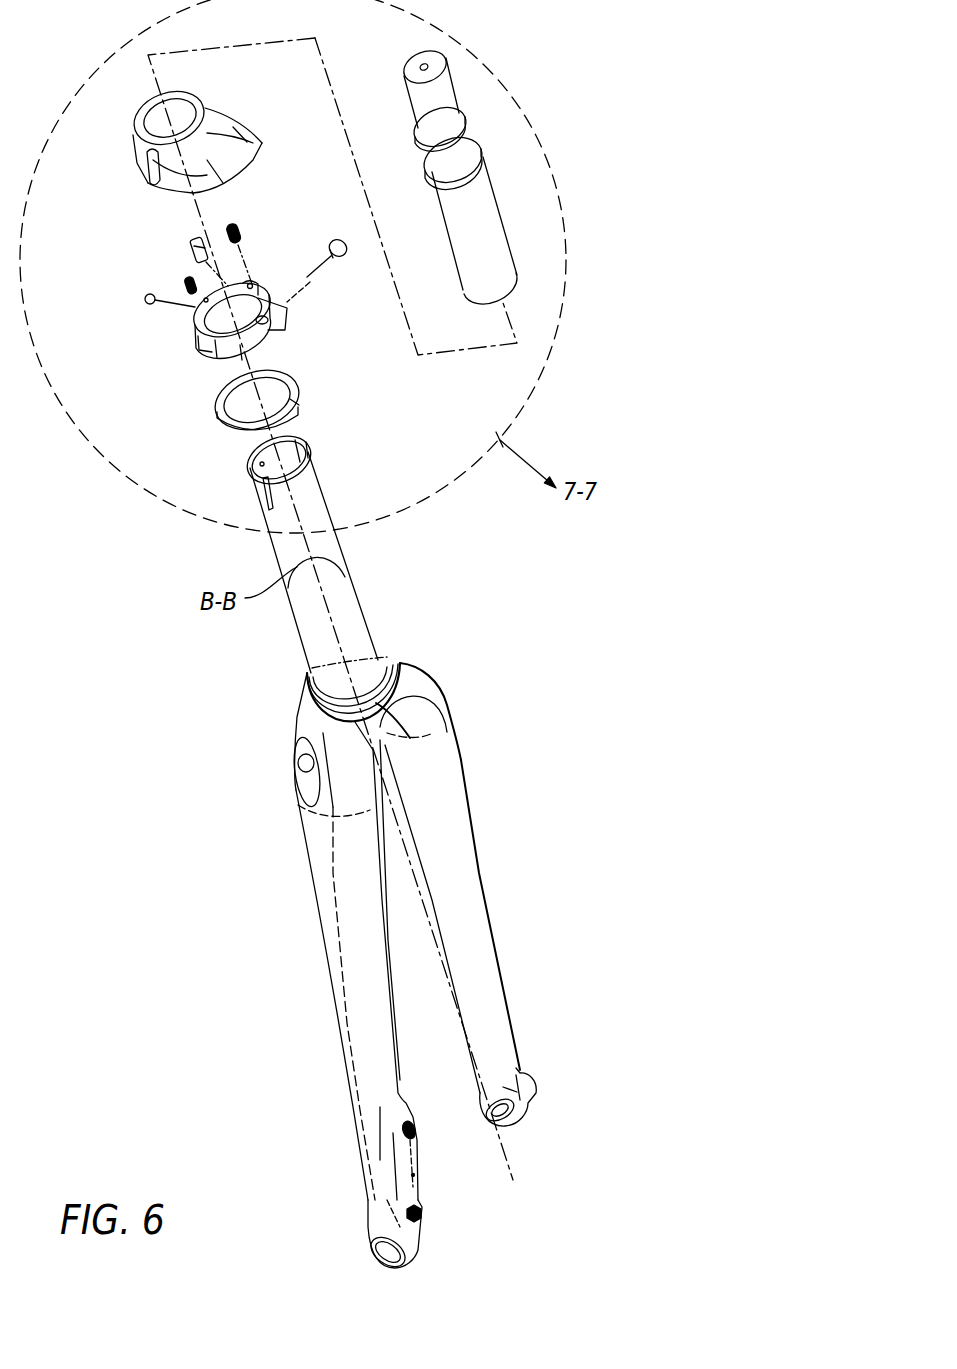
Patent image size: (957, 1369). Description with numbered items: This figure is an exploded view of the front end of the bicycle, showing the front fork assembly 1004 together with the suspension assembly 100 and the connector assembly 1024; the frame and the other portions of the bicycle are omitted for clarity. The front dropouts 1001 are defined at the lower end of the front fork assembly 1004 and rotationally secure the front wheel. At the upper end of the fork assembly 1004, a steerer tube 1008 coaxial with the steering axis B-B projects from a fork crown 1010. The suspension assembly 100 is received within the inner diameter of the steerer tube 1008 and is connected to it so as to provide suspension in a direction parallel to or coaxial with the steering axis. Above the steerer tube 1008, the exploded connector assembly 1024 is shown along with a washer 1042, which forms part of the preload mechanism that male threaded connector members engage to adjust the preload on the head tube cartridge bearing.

The suspension assembly 100 is at (516, 150).
The connector assembly 1024 is at (188, 460).
The washer 1042 is at (300, 388).
The steerer tube 1008 is at (330, 497).
The fork crown 1010 is at (300, 723).
The front fork assembly 1004 is at (262, 869).
The front dropouts 1001 is at (375, 1256).